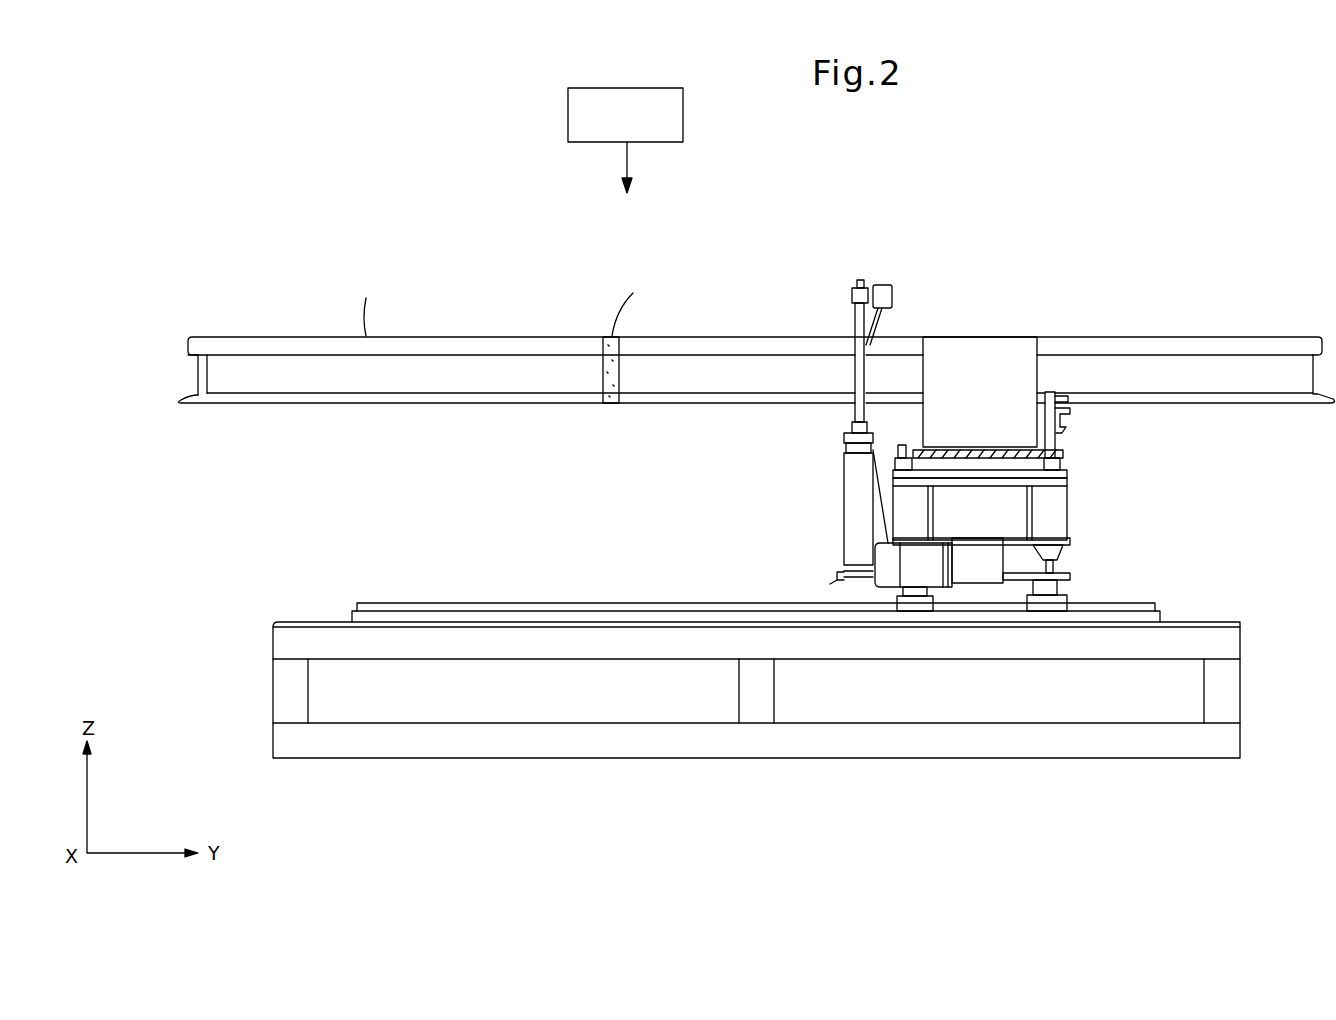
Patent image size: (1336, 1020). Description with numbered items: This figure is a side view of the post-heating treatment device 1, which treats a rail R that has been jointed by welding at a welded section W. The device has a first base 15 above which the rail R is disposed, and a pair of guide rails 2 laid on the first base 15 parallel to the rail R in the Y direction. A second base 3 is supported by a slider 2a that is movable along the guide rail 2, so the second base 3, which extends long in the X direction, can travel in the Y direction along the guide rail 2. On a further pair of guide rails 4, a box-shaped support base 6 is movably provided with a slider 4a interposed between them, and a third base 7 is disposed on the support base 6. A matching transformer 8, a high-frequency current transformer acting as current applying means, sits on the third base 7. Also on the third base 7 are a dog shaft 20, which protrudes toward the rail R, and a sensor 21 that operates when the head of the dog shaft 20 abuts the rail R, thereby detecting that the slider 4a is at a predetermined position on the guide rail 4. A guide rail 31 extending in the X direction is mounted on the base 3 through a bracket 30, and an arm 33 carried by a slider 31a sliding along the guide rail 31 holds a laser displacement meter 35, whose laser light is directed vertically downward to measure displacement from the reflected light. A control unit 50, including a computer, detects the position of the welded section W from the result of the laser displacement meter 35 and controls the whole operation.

The post-heating treatment device 1 is at (276, 210).
The guide rail 2 is at (1155, 603).
The slider 2a is at (922, 612).
The second base 3 is at (842, 576).
The guide rail 4 is at (1052, 576).
The slider 4a is at (1055, 572).
The support base 6 is at (1050, 523).
The third base 7 is at (900, 446).
The matching transformer 8 is at (1019, 356).
The first base 15 is at (1233, 645).
The dog shaft 20 is at (1060, 392).
The sensor 21 is at (1070, 423).
The bracket 30 is at (846, 503).
The guide rail 31 is at (846, 450).
The slider 31a is at (848, 438).
The arm 33 is at (856, 322).
The laser displacement meter 35 is at (884, 286).
The control unit 50 is at (683, 122).